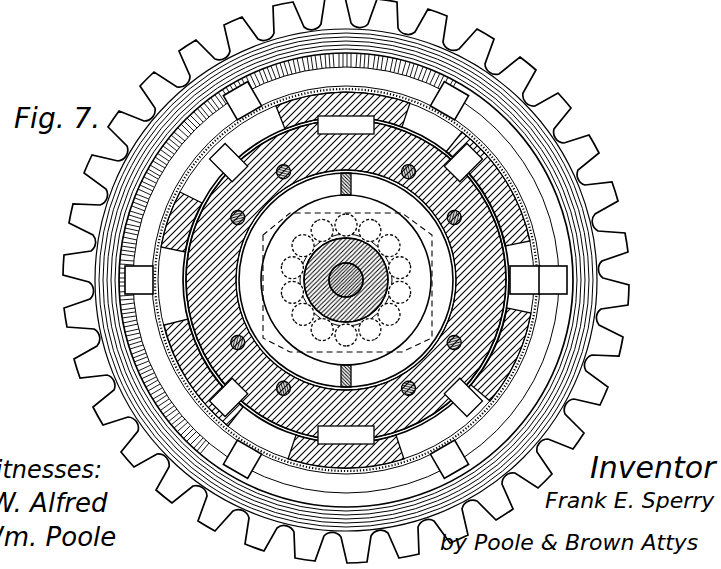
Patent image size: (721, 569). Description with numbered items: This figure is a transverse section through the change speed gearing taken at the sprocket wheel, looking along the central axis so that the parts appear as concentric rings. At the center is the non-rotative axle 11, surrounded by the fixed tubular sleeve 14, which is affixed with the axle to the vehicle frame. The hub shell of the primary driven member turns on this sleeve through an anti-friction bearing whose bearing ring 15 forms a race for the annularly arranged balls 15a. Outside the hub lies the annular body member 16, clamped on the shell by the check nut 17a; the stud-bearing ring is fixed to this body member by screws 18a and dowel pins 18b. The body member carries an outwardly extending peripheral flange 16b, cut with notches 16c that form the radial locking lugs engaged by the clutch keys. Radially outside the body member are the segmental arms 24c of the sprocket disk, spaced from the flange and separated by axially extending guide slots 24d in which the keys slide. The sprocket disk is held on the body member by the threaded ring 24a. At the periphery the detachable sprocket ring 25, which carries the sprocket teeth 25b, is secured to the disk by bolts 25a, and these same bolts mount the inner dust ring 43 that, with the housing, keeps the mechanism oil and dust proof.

The axle 11 is at (241, 272).
The sleeve 14 is at (447, 258).
The bearing ring 15 is at (346, 280).
The balls 15a is at (560, 362).
The annular body member 16 is at (477, 285).
The peripheral flange 16b is at (420, 138).
The notches 16c is at (346, 282).
The check nut 17a is at (440, 240).
The screws 18a is at (233, 220).
The dowel pins 18b is at (233, 170).
The ring 24a is at (408, 422).
The segmental arms 24c is at (498, 162).
The guide slots 24d is at (240, 137).
The sprocket ring 25 is at (443, 100).
The bolts 25a is at (247, 100).
The sprocket teeth 25b is at (537, 72).
The inner dust ring 43 is at (650, 166).